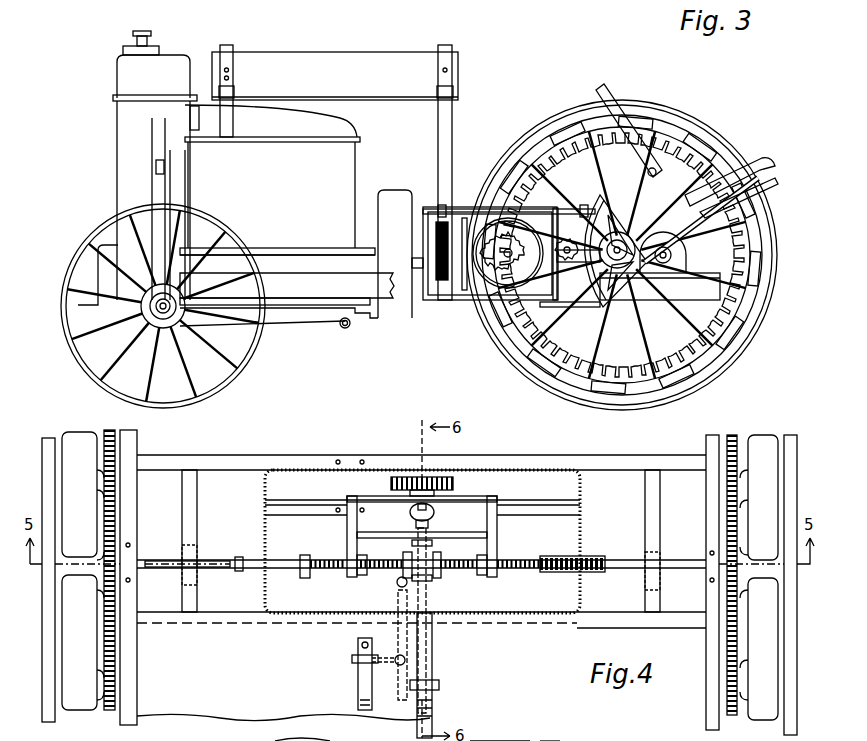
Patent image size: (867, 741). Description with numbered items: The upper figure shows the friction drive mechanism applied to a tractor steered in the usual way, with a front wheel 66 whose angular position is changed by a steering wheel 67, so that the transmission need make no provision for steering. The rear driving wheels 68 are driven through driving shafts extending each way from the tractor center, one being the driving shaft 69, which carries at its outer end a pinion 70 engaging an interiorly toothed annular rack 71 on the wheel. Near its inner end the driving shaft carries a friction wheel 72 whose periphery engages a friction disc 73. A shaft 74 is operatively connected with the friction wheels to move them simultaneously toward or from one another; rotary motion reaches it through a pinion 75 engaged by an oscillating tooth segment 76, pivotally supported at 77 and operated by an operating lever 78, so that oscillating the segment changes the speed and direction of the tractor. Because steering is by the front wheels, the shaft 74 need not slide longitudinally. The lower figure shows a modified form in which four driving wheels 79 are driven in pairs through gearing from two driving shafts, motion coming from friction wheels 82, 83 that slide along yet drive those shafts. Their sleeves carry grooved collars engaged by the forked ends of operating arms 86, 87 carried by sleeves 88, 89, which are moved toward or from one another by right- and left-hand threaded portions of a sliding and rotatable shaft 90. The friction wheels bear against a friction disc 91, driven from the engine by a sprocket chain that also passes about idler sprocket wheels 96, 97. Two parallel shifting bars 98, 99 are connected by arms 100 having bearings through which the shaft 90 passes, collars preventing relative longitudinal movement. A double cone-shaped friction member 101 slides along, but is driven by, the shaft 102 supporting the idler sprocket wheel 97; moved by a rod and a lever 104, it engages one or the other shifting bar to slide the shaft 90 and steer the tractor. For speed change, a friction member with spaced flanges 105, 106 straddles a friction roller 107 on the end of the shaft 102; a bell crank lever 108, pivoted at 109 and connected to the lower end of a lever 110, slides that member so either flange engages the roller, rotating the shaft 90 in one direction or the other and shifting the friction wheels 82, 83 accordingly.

In FIG. 3, the front wheel 66 is at (68, 265).
In FIG. 3, the steering wheel 67 is at (600, 86).
In FIG. 3, the rear driving wheel 68 is at (758, 258).
In FIG. 3, the driving shaft 69 is at (470, 280).
In FIG. 3, the pinion 70 is at (478, 209).
In FIG. 3, the interiorly toothed annular rack 71 is at (730, 330).
In FIG. 3, the friction wheel 72 is at (520, 295).
In FIG. 3, the friction disc 73 is at (450, 210).
In FIG. 3, the shaft 74 is at (588, 232).
In FIG. 3, the pinion 75 is at (570, 262).
In FIG. 3, the oscillating tooth segment 76 is at (600, 310).
In FIG. 3, the pivot 77 is at (663, 263).
In FIG. 3, the operating lever 78 is at (745, 210).
In FIG. 4, the driving wheels 79 is at (68, 486).
In FIG. 4, the friction wheel 82 is at (500, 734).
In FIG. 4, the friction wheel 83 is at (417, 725).
In FIG. 4, the operating arm 86 is at (515, 570).
In FIG. 4, the operating arm 87 is at (302, 555).
In FIG. 4, the sleeve 88 is at (596, 572).
In FIG. 4, the sleeve 89 is at (300, 578).
In FIG. 4, the sliding and rotatable shaft 90 is at (213, 567).
In FIG. 4, the friction disc 91 is at (542, 734).
In FIG. 4, the idler sprocket wheel 96 is at (320, 740).
In FIG. 4, the idler sprocket wheel 97 is at (410, 477).
In FIG. 4, the shifting bar 98 is at (416, 512).
In FIG. 4, the shifting bar 99 is at (497, 534).
In FIG. 4, the arms 100 is at (347, 555).
In FIG. 4, the double cone-shaped friction member 101 is at (434, 513).
In FIG. 4, the shaft 102 is at (450, 492).
In FIG. 4, the lever 104 is at (400, 716).
In FIG. 4, the friction flange 105 is at (404, 555).
In FIG. 4, the friction flange 106 is at (441, 555).
In FIG. 4, the friction roller 107 is at (435, 578).
In FIG. 4, the bell crank lever 108 is at (397, 640).
In FIG. 4, the pivot 109 is at (399, 666).
In FIG. 4, the lever 110 is at (355, 680).